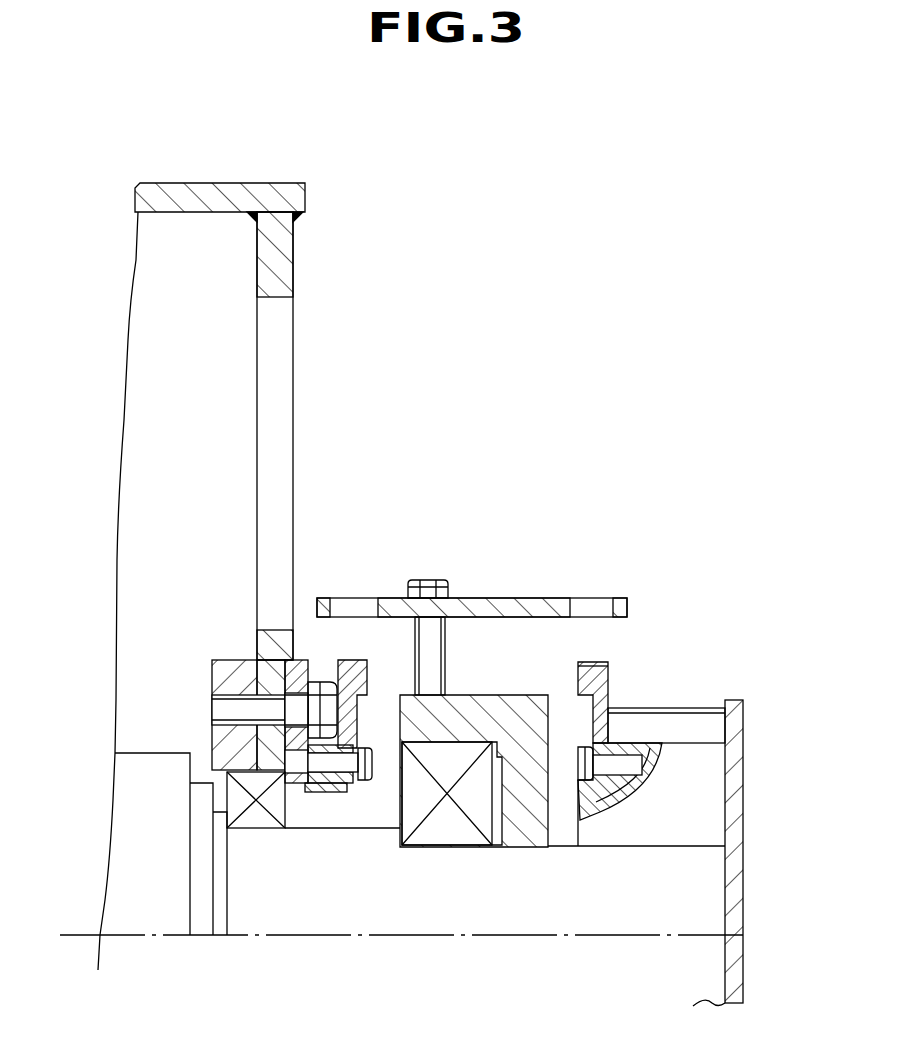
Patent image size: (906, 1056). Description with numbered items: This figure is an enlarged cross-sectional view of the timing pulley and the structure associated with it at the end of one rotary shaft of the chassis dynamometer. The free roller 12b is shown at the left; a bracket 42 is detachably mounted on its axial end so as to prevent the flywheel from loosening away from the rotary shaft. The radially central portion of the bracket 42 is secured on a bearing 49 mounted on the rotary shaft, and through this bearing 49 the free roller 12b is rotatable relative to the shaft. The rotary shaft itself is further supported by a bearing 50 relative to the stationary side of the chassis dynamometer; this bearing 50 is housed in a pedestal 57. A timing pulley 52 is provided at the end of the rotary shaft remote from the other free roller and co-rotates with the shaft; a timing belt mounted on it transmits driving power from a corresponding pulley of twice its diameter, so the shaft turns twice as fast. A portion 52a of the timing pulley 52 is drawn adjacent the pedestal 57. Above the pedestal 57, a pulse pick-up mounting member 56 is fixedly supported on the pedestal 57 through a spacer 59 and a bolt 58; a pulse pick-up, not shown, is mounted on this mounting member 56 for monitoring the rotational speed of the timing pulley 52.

The free roller 12b is at (217, 183).
The bracket 42 is at (290, 343).
The bearing 49 is at (263, 820).
The bearing 50 is at (460, 828).
The timing pulley 52 is at (675, 737).
The frame bracket 52a is at (603, 663).
The pulse pick-up mounting member 56 is at (498, 598).
The pedestal 57 is at (474, 805).
The bolt 58 is at (430, 578).
The spacer 59 is at (415, 643).